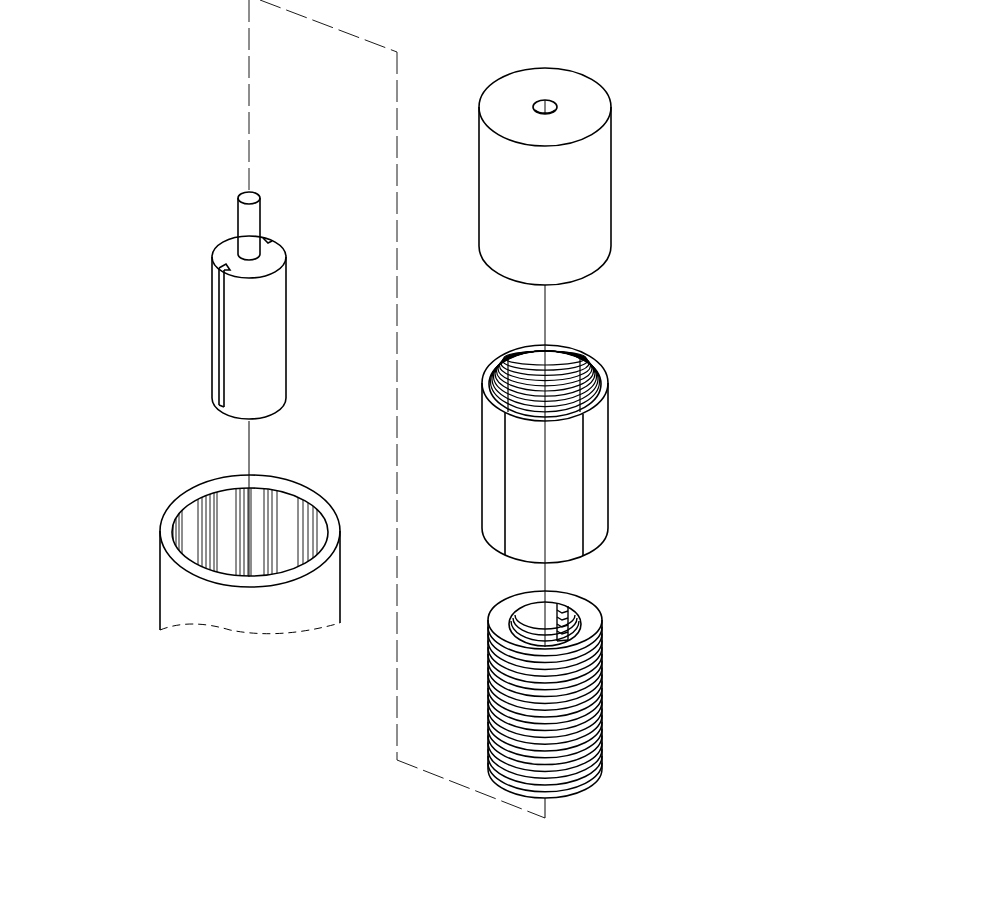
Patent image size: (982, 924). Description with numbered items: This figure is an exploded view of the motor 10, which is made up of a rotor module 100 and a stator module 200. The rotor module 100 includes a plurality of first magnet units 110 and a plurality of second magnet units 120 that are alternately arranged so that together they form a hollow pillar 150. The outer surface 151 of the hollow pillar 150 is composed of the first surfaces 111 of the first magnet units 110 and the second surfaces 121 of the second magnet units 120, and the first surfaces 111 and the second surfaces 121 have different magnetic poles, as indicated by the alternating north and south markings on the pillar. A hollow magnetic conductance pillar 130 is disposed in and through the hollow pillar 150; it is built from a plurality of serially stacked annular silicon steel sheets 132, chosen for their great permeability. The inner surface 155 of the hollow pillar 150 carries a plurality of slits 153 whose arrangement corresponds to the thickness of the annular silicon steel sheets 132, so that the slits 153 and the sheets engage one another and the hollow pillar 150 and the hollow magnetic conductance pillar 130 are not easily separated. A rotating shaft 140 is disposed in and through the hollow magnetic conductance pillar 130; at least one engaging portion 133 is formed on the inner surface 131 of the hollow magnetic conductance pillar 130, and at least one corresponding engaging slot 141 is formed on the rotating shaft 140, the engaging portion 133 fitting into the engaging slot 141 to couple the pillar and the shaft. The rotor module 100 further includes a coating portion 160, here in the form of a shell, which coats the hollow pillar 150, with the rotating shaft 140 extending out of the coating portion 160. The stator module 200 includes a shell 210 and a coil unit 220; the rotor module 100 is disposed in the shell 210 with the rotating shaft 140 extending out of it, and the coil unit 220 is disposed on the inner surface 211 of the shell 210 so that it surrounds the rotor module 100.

The motor 10 is at (744, 805).
The rotor module 100 is at (647, 105).
The first magnet units 110 is at (577, 445).
The first surfaces 111 is at (577, 427).
The second magnet units 120 is at (605, 530).
The second surfaces 121 is at (598, 508).
The hollow magnetic conductance pillar 130 is at (627, 715).
The inner surface of the hollow magnetic conductance pillar 131 is at (578, 622).
The annular silicon steel sheets 132 is at (585, 638).
The engaging portion 133 is at (562, 603).
The rotating shaft 140 is at (240, 190).
The engaging slot 141 is at (220, 303).
The hollow pillar 150 is at (583, 348).
The outer surface of the hollow pillar 151 is at (496, 440).
The slits 153 is at (518, 355).
The inner surface of the hollow pillar 155 is at (474, 369).
The coating portion 160 is at (595, 203).
The stator module 200 is at (152, 302).
The shell 210 is at (210, 592).
The inner surface of the shell 211 is at (193, 517).
The coil unit 220 is at (205, 503).